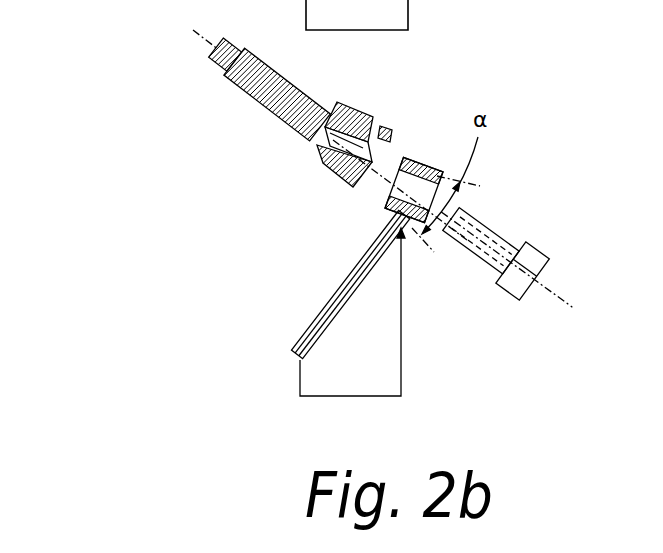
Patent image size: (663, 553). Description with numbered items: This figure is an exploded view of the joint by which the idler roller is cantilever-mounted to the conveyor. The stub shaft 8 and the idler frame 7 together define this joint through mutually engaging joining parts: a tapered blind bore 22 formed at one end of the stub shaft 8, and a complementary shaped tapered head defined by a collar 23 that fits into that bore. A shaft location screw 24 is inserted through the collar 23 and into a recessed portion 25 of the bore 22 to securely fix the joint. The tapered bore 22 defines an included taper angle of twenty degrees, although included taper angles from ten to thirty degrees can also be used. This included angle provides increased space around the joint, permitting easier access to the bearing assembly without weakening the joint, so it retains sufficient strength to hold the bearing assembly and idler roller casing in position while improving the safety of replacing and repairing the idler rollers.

The recessed portion 25 is at (310, 155).
The stub shaft 8 is at (338, 167).
The tapered blind bore 22 is at (380, 133).
The collar 23 is at (420, 168).
The idler frame 7 is at (298, 354).
The shaft location screw 24 is at (546, 243).